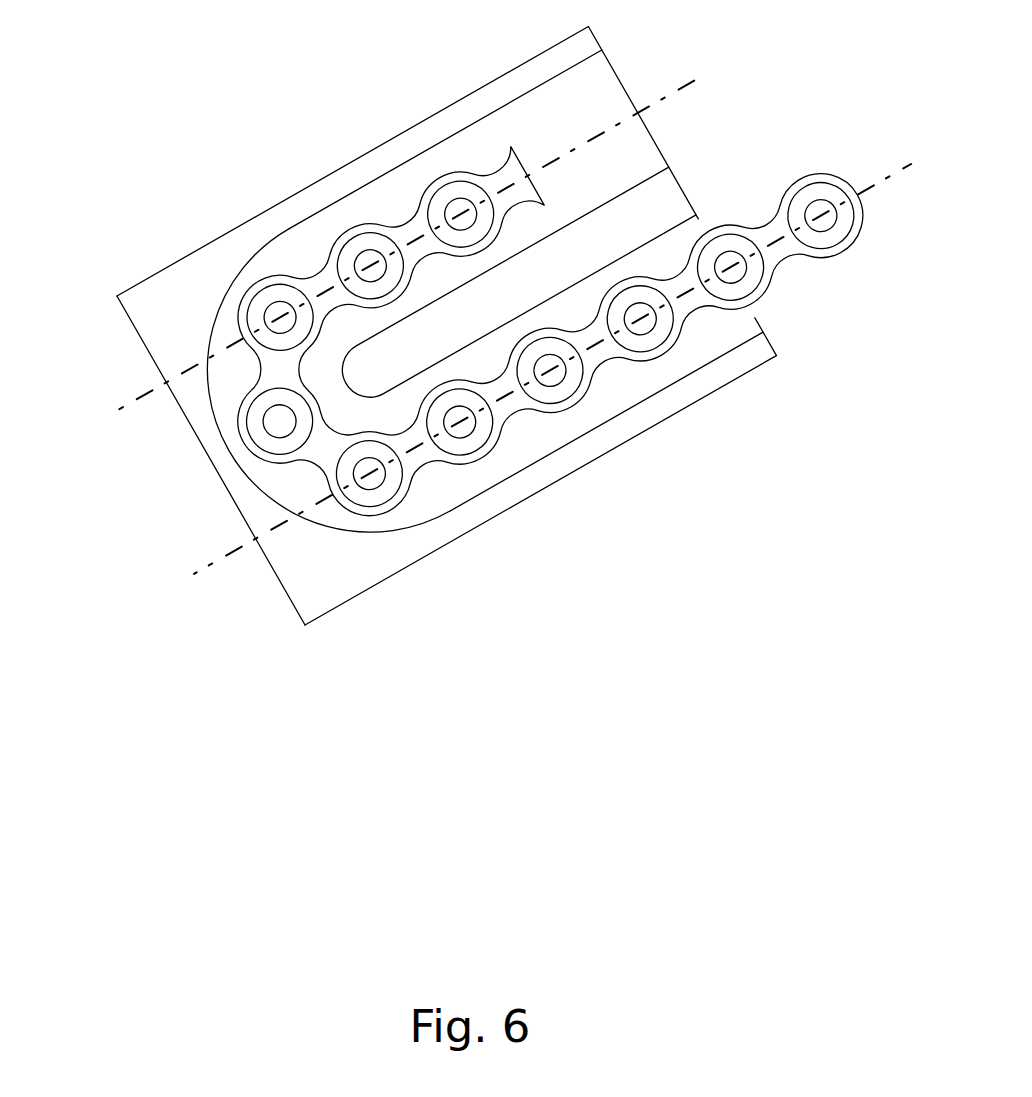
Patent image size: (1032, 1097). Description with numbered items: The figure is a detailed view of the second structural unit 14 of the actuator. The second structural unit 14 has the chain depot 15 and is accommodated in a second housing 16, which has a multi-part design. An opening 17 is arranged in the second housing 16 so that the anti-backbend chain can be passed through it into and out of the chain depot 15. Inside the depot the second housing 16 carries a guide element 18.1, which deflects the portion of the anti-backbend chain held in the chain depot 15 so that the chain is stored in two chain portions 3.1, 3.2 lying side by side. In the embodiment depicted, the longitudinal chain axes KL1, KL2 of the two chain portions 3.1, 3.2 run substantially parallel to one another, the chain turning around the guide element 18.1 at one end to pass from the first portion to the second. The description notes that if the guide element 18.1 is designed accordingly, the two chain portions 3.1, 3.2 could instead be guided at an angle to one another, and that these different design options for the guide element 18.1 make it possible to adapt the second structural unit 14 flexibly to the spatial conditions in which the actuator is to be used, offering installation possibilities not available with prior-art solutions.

The second structural unit 14 is at (353, 118).
The chain depot 15 is at (514, 287).
The second housing 16 is at (210, 446).
The opening 17 is at (748, 313).
The guide element 18.1 is at (361, 532).
The first chain portion 3.1 is at (342, 257).
The second chain portion 3.2 is at (573, 408).
The longitudinal chain axis KL1 is at (365, 276).
The longitudinal chain axis KL2 is at (515, 402).